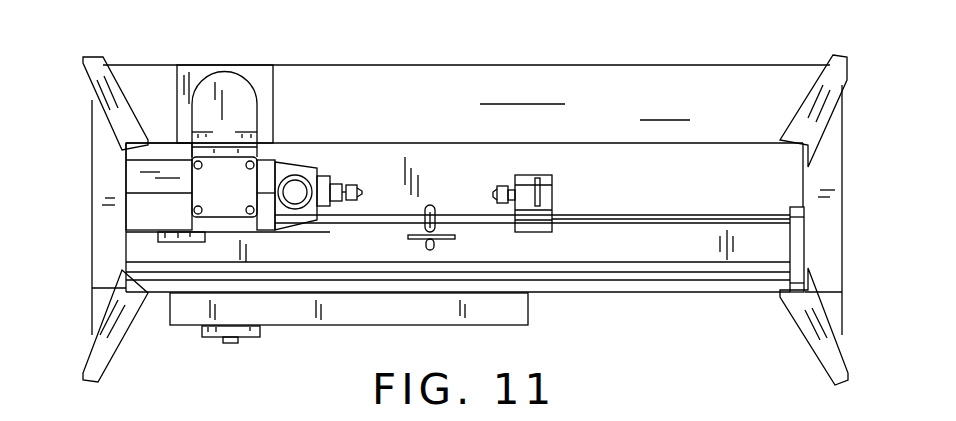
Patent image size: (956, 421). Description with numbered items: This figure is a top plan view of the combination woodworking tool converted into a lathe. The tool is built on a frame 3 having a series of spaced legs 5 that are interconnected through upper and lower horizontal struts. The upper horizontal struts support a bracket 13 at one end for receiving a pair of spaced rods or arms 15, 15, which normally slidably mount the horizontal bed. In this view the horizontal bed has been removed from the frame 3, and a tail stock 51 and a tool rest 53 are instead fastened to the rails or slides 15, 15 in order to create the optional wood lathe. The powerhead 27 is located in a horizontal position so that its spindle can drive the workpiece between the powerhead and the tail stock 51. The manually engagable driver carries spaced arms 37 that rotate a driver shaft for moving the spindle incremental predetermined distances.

The frame 3 is at (98, 186).
The legs 5 is at (100, 56).
The bracket 13 is at (798, 243).
The rods or arms 15 is at (662, 215).
The powerhead 27 is at (163, 157).
The spaced arms 37 is at (325, 155).
The tail stock 51 is at (548, 193).
The tool rest 53 is at (452, 237).